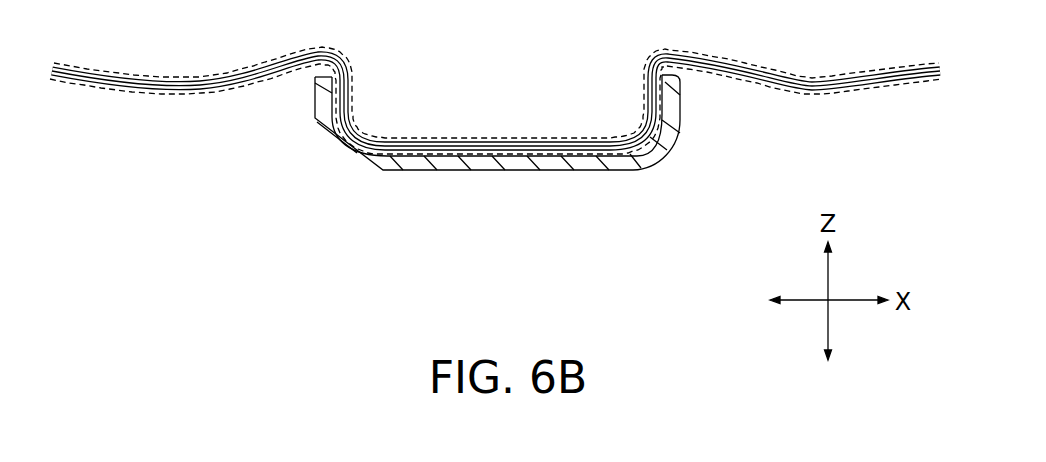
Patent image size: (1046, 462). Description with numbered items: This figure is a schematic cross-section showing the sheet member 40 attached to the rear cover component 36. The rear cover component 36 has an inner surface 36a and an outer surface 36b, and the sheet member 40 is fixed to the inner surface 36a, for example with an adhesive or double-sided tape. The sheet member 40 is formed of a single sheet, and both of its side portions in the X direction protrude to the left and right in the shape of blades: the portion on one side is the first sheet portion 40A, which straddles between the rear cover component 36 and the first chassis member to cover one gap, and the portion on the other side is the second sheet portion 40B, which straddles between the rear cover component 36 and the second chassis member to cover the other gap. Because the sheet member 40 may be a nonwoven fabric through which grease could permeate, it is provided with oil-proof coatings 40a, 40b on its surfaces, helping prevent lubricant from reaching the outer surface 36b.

The rear cover component 36 is at (497, 156).
The inner surface of the rear cover component 36a is at (503, 150).
The outer surface of the rear cover component 36b is at (573, 172).
The sheet member 40 is at (495, 86).
The first sheet portion 40A is at (187, 90).
The second sheet portion 40B is at (802, 92).
The coating 40a is at (847, 80).
The coating 40b is at (892, 93).